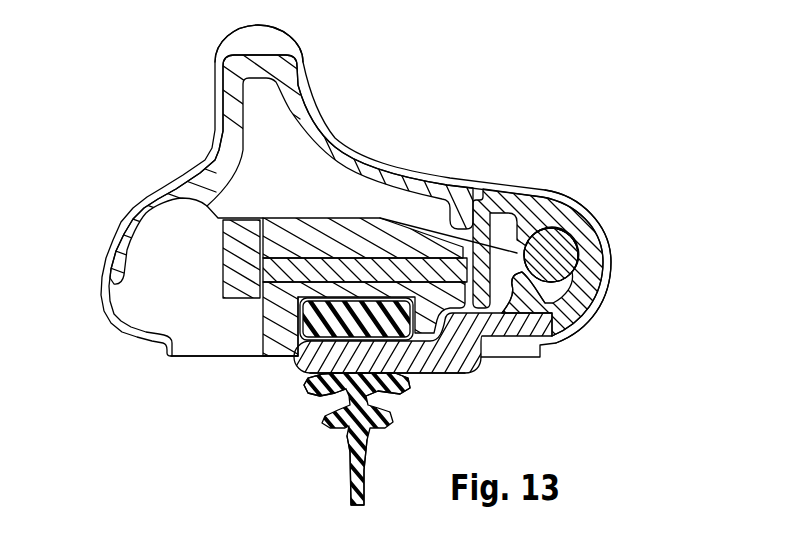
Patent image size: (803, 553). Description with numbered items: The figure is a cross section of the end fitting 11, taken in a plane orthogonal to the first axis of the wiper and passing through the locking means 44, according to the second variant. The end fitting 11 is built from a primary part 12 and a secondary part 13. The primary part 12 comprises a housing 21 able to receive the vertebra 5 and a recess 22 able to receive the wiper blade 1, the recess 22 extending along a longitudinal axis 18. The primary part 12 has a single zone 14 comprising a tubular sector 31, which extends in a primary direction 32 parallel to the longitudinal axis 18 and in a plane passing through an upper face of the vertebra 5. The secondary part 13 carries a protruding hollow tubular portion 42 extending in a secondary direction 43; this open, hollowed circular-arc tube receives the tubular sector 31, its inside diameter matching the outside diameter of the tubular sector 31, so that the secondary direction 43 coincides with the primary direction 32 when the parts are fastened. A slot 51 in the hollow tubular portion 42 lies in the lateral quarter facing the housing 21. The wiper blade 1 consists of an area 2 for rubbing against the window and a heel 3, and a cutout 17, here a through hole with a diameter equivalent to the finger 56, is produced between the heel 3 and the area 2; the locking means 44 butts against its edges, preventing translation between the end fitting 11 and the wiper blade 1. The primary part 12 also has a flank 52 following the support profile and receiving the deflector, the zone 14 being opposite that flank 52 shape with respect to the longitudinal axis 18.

The wiper blade 1 is at (331, 447).
The area for rubbing 2 is at (350, 477).
The heel 3 is at (307, 315).
The vertebra 5 is at (272, 277).
The end fitting 11 is at (549, 130).
The primary part 12 is at (190, 160).
The secondary part 13 is at (592, 314).
The zone 14 is at (584, 196).
The cutout 17 is at (357, 397).
The longitudinal axis 18 is at (385, 313).
The housing 21 is at (293, 277).
The recess 22 is at (293, 340).
The tubular sector 31 is at (567, 259).
The primary direction 32 is at (553, 255).
The secondary direction 43 is at (551, 255).
The hollow tubular portion 42 is at (514, 296).
The locking means 44 is at (454, 377).
The slot 51 is at (457, 205).
The flank 52 is at (300, 80).
The finger 56 is at (400, 358).